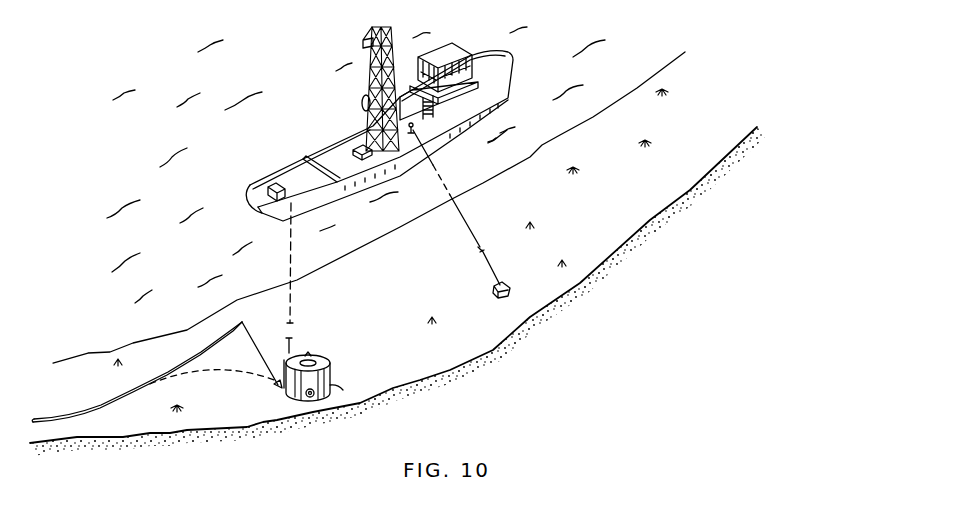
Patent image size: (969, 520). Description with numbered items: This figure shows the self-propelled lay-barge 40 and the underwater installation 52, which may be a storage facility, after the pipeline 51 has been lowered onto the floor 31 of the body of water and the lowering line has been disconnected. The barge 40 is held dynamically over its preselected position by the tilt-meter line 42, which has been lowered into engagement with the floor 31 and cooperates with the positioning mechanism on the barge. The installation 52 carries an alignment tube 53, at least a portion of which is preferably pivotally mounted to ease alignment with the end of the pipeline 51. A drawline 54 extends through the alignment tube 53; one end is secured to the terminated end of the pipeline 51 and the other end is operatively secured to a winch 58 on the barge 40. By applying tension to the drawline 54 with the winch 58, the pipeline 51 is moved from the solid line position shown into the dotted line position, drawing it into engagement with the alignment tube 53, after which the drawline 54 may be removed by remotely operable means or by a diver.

The lay-barge 40 is at (343, 127).
The winch 58 is at (270, 185).
The tilt-meter line 42 is at (465, 227).
The floor 31 is at (570, 220).
The drawline 54 is at (309, 278).
The underwater installation 52 is at (313, 363).
The alignment tube 53 is at (278, 387).
The pipeline 51 is at (133, 390).